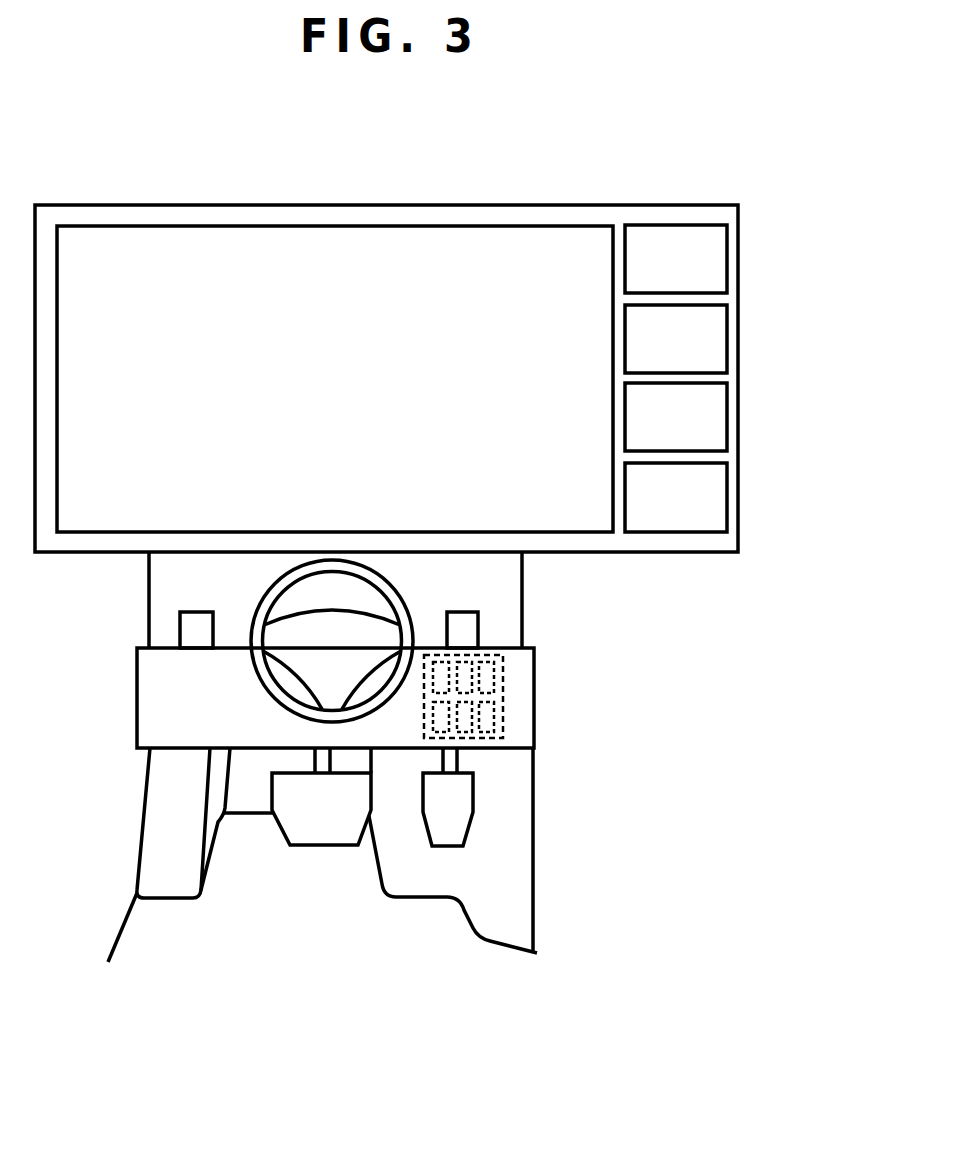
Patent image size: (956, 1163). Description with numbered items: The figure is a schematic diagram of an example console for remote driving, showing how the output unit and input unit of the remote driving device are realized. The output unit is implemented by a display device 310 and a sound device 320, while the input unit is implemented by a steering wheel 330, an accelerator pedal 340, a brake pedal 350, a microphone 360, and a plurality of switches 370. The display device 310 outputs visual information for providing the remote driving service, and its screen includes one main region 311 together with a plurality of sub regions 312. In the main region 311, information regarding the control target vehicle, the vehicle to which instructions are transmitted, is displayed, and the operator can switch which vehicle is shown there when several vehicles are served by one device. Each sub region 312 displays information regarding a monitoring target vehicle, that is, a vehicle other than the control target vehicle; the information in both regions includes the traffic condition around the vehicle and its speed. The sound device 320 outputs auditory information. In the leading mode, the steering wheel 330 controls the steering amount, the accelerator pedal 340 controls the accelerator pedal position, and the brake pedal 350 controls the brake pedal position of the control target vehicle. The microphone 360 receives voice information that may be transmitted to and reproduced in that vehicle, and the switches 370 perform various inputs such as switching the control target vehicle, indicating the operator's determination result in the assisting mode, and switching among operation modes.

The display device 310 is at (395, 206).
The main region 311 is at (221, 227).
The sub regions 312 is at (727, 268).
The sound device 320 is at (463, 630).
The steering wheel 330 is at (254, 668).
The accelerator pedal 340 is at (449, 824).
The brake pedal 350 is at (327, 814).
The microphone 360 is at (198, 632).
The plurality of switches 370 is at (503, 696).